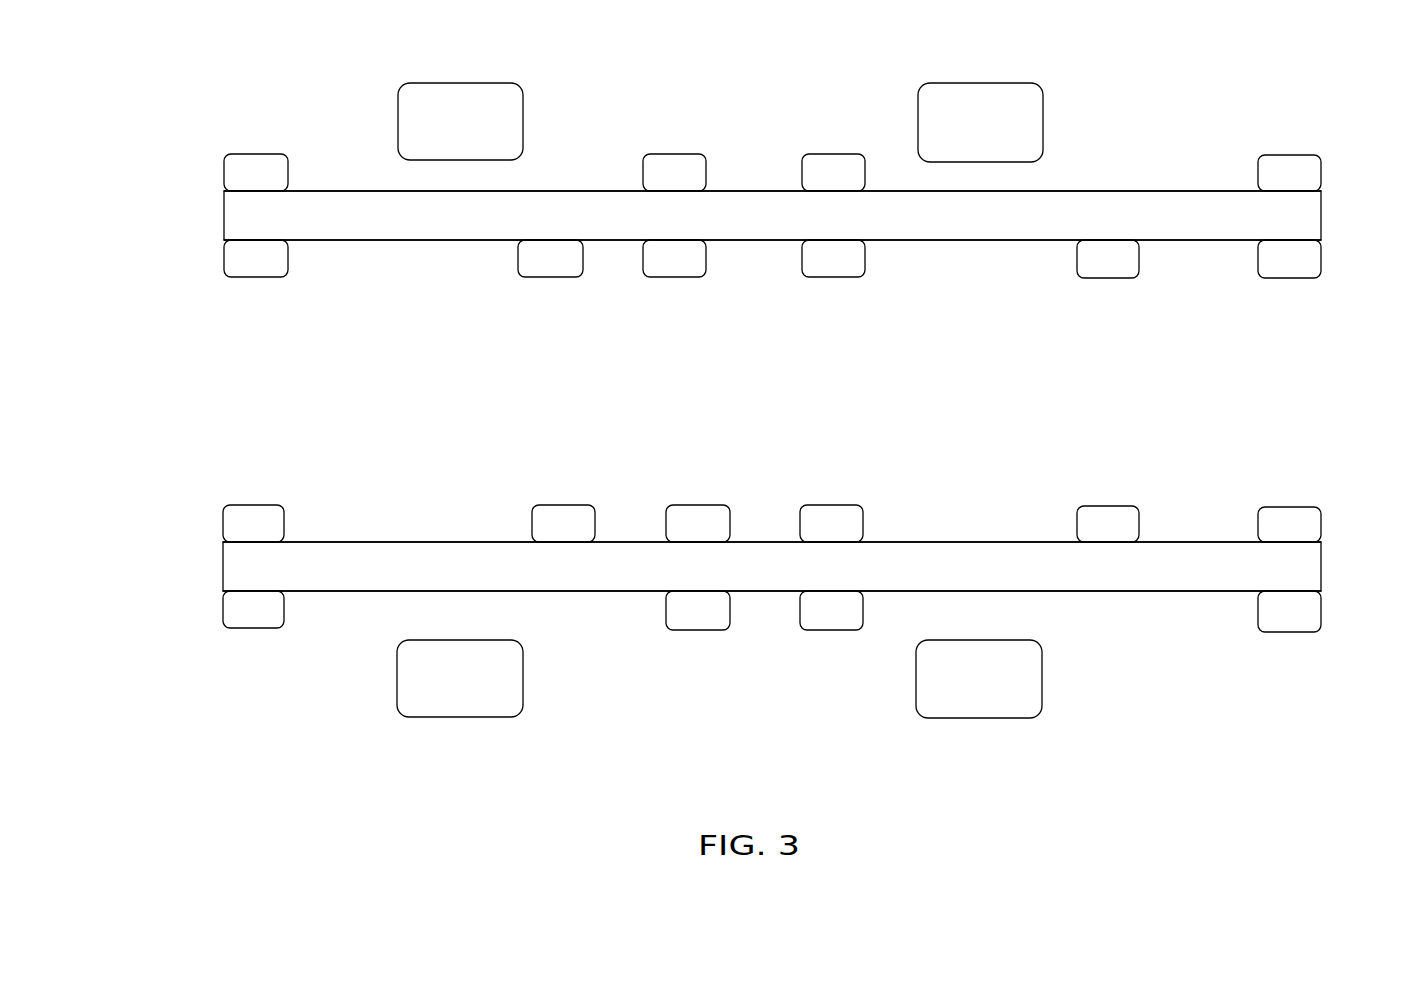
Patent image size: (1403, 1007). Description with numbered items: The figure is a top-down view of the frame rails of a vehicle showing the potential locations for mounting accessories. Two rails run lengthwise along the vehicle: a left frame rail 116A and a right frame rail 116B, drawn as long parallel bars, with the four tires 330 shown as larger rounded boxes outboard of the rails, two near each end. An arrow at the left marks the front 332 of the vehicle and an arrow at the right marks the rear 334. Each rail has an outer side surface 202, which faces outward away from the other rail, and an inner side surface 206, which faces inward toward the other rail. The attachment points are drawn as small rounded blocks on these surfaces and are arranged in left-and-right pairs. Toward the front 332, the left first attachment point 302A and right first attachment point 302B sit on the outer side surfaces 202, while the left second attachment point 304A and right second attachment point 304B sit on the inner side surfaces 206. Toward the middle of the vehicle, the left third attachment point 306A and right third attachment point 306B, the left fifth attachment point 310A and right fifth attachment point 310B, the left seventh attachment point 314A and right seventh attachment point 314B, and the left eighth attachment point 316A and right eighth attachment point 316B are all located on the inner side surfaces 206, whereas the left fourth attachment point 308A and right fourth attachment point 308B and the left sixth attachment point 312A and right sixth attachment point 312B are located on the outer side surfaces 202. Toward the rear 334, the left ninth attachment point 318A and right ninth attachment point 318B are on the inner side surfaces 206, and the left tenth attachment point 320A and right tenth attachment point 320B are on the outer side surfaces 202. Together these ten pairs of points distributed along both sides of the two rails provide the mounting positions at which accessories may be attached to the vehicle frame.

The left frame rail 116A is at (342, 550).
The right frame rail 116B is at (335, 193).
The outer side surface 202 is at (382, 168).
The inner side surface 206 is at (363, 247).
The left first attachment point 302A is at (222, 608).
The right first attachment point 302B is at (248, 153).
The left second attachment point 304A is at (222, 520).
The right second attachment point 304B is at (248, 278).
The left third attachment point 306A is at (555, 502).
The right third attachment point 306B is at (547, 278).
The left fourth attachment point 308A is at (698, 630).
The right fourth attachment point 308B is at (675, 153).
The left fifth attachment point 310A is at (695, 502).
The right fifth attachment point 310B is at (675, 277).
The left sixth attachment point 312A is at (833, 630).
The right sixth attachment point 312B is at (832, 153).
The left seventh attachment point 314A is at (840, 502).
The right seventh attachment point 314B is at (835, 277).
The left eighth attachment point 316A is at (1107, 506).
The right eighth attachment point 316B is at (1107, 283).
The left ninth attachment point 318A is at (1280, 507).
The right ninth attachment point 318B is at (1295, 285).
The left tenth attachment point 320A is at (1288, 633).
The right tenth attachment point 320B is at (1289, 155).
The tire 330 is at (525, 110).
The front 332 is at (186, 385).
The rear 334 is at (1311, 383).